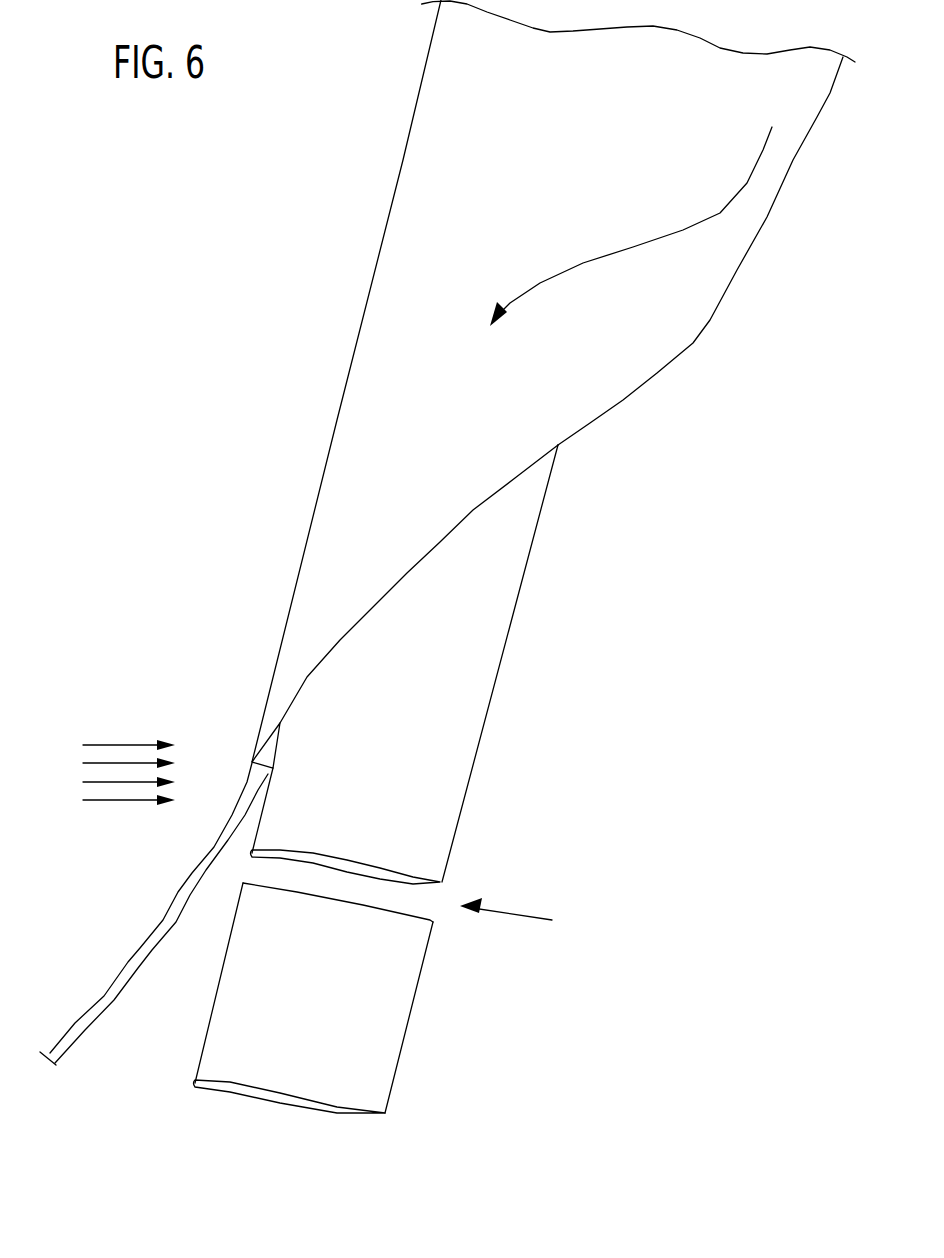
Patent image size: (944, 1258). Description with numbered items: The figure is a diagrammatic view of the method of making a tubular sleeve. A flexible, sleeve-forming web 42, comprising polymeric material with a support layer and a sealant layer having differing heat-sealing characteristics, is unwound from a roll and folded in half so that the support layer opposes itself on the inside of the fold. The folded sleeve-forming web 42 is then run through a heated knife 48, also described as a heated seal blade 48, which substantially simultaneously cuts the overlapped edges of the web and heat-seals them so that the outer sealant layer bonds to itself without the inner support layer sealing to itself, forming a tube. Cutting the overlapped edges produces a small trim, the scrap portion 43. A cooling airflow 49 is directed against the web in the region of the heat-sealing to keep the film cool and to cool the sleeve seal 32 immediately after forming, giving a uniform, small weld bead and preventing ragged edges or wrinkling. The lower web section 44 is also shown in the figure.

The sleeve seal 32 is at (250, 860).
The sleeve-forming web 42 is at (500, 594).
The scrap portion 43 is at (120, 963).
The lower blade section 44 is at (398, 1000).
The heated knife 48 is at (279, 743).
The cooling airflow 49 is at (113, 814).